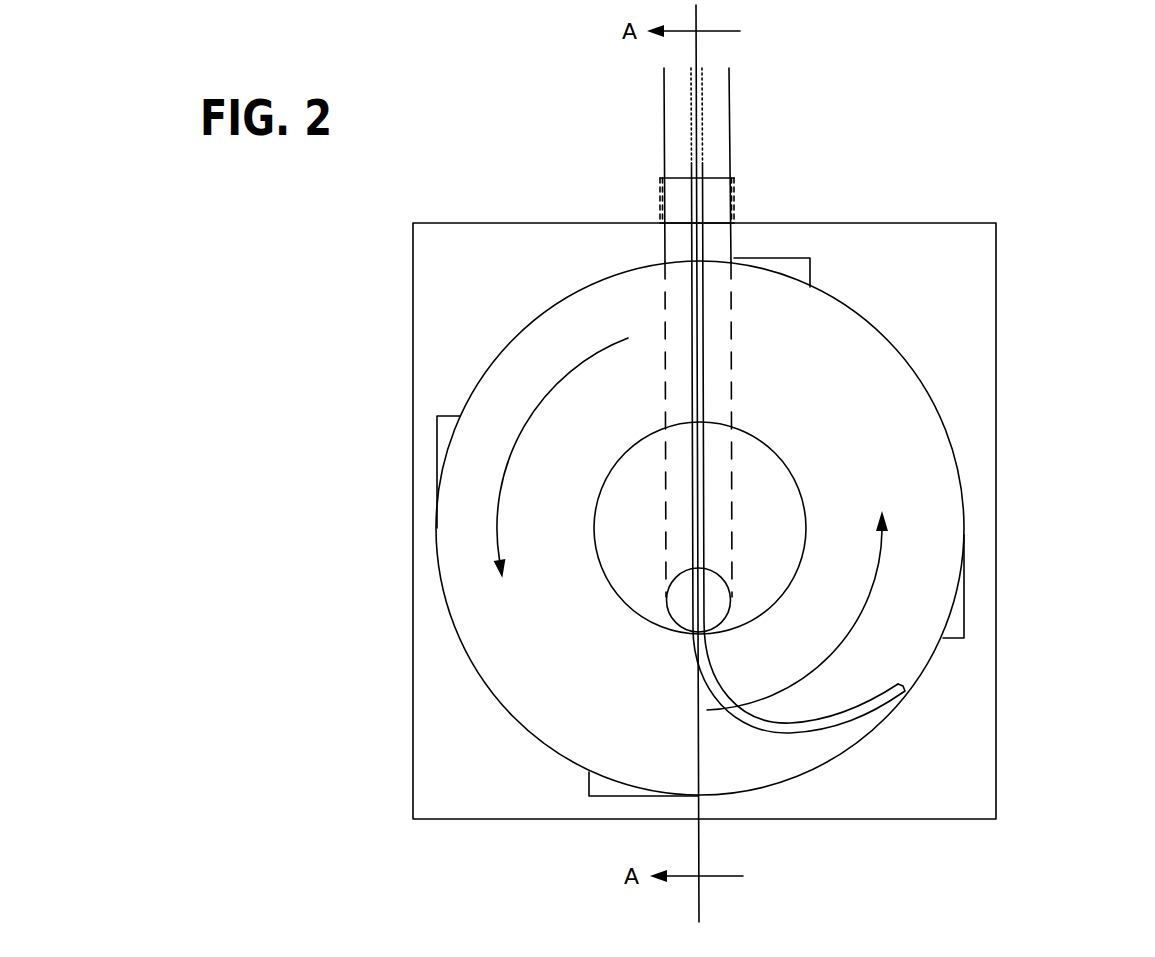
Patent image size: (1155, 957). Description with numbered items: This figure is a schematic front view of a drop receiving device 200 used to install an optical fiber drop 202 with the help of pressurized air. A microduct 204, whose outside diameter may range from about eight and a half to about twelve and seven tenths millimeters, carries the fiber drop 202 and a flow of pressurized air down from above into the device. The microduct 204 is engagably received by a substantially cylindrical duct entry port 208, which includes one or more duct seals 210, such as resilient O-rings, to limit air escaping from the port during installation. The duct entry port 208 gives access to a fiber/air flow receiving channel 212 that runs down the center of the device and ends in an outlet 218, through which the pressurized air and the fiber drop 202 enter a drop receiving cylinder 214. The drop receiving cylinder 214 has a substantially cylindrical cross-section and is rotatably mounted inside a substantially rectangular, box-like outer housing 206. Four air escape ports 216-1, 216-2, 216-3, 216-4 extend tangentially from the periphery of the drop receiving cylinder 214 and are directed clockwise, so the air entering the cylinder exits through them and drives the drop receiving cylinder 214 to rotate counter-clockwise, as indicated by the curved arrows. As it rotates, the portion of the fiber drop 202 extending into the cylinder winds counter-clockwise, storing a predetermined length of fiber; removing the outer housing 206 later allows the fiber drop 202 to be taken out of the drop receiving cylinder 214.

The drop receiving device 200 is at (1046, 279).
The fiber drop 202 is at (800, 730).
The microduct 204 is at (719, 155).
The outer housing 206 is at (457, 285).
The duct entry port 208 is at (675, 197).
The duct seal 210 is at (736, 200).
The fiber/air flow receiving channel 212 is at (677, 490).
The drop receiving cylinder 214 is at (584, 665).
The air escape port 216-1 is at (812, 273).
The air escape port 216-2 is at (953, 633).
The air escape port 216-3 is at (600, 785).
The air escape port 216-4 is at (443, 440).
The outlet 218 is at (672, 614).